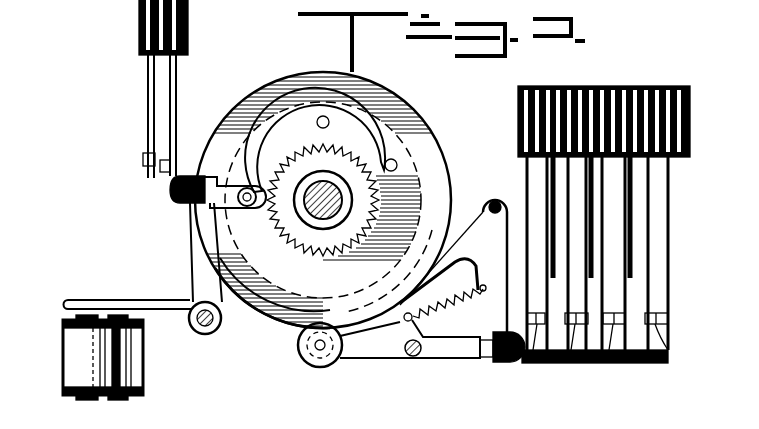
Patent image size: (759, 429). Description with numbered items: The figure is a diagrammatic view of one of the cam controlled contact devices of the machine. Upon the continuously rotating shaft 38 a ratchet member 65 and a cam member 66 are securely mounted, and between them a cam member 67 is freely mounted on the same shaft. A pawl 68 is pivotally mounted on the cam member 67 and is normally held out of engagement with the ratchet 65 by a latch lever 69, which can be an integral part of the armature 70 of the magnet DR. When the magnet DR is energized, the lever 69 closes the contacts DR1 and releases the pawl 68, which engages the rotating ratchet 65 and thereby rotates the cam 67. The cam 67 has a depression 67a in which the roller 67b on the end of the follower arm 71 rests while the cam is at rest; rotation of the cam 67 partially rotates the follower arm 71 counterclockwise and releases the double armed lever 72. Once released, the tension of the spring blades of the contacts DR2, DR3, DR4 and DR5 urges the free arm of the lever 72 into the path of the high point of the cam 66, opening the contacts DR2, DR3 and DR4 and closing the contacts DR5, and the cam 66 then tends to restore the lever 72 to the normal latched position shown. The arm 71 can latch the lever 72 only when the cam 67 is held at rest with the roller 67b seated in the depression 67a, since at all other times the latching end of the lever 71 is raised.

The cam member 66 is at (412, 115).
The ratchet member 65 is at (437, 167).
The shaft 38 is at (303, 214).
The pawl 68 is at (276, 148).
The contacts DR1 is at (166, 114).
The latch lever 69 is at (197, 256).
The armature 70 is at (112, 304).
The magnet DR is at (74, 356).
The cam member 67 is at (252, 318).
The depression 67a is at (346, 300).
The roller 67b is at (330, 362).
The follower arm 71 is at (358, 356).
The double armed lever 72 is at (482, 182).
The contacts DR2 is at (531, 361).
The contacts DR3 is at (568, 361).
The contacts DR4 is at (622, 361).
The contacts DR5 is at (672, 350).